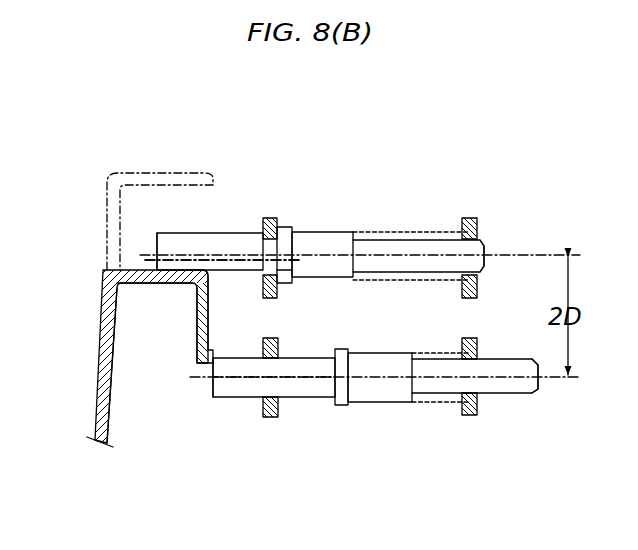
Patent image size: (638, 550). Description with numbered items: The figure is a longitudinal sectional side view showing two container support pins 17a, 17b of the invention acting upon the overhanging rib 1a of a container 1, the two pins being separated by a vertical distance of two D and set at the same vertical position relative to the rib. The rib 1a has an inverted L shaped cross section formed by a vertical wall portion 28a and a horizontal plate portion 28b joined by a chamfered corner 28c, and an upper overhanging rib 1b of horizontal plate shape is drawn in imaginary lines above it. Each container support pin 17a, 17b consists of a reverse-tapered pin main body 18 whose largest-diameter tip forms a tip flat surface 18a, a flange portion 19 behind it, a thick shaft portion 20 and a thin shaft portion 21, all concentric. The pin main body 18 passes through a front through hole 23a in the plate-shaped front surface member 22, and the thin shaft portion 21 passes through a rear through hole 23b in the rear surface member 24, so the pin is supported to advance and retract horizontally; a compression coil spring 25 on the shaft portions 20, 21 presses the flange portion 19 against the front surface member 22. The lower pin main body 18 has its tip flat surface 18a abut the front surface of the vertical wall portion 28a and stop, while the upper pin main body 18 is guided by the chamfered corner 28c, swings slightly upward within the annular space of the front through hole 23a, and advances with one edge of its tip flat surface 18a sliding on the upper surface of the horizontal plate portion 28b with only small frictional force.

The container 1 is at (112, 409).
The overhanging rib 1a is at (212, 313).
The upper overhanging rib 1b is at (210, 245).
The container support pin 17a is at (185, 232).
The container support pin 17b is at (185, 232).
The pin main body 18 is at (212, 232).
The tip flat surface 18a is at (156, 244).
The flange portion 19 is at (305, 228).
The thick shaft portion 20 is at (340, 232).
The thin shaft portion 21 is at (428, 248).
The front surface member 22 is at (272, 216).
The front through hole 23a is at (263, 272).
The rear through hole 23b is at (482, 241).
The rear surface member 24 is at (470, 218).
The compression coil spring 25 is at (404, 232).
The vertical wall portion 28a is at (197, 323).
The horizontal plate portion 28b is at (163, 280).
The chamfered corner 28c is at (210, 272).